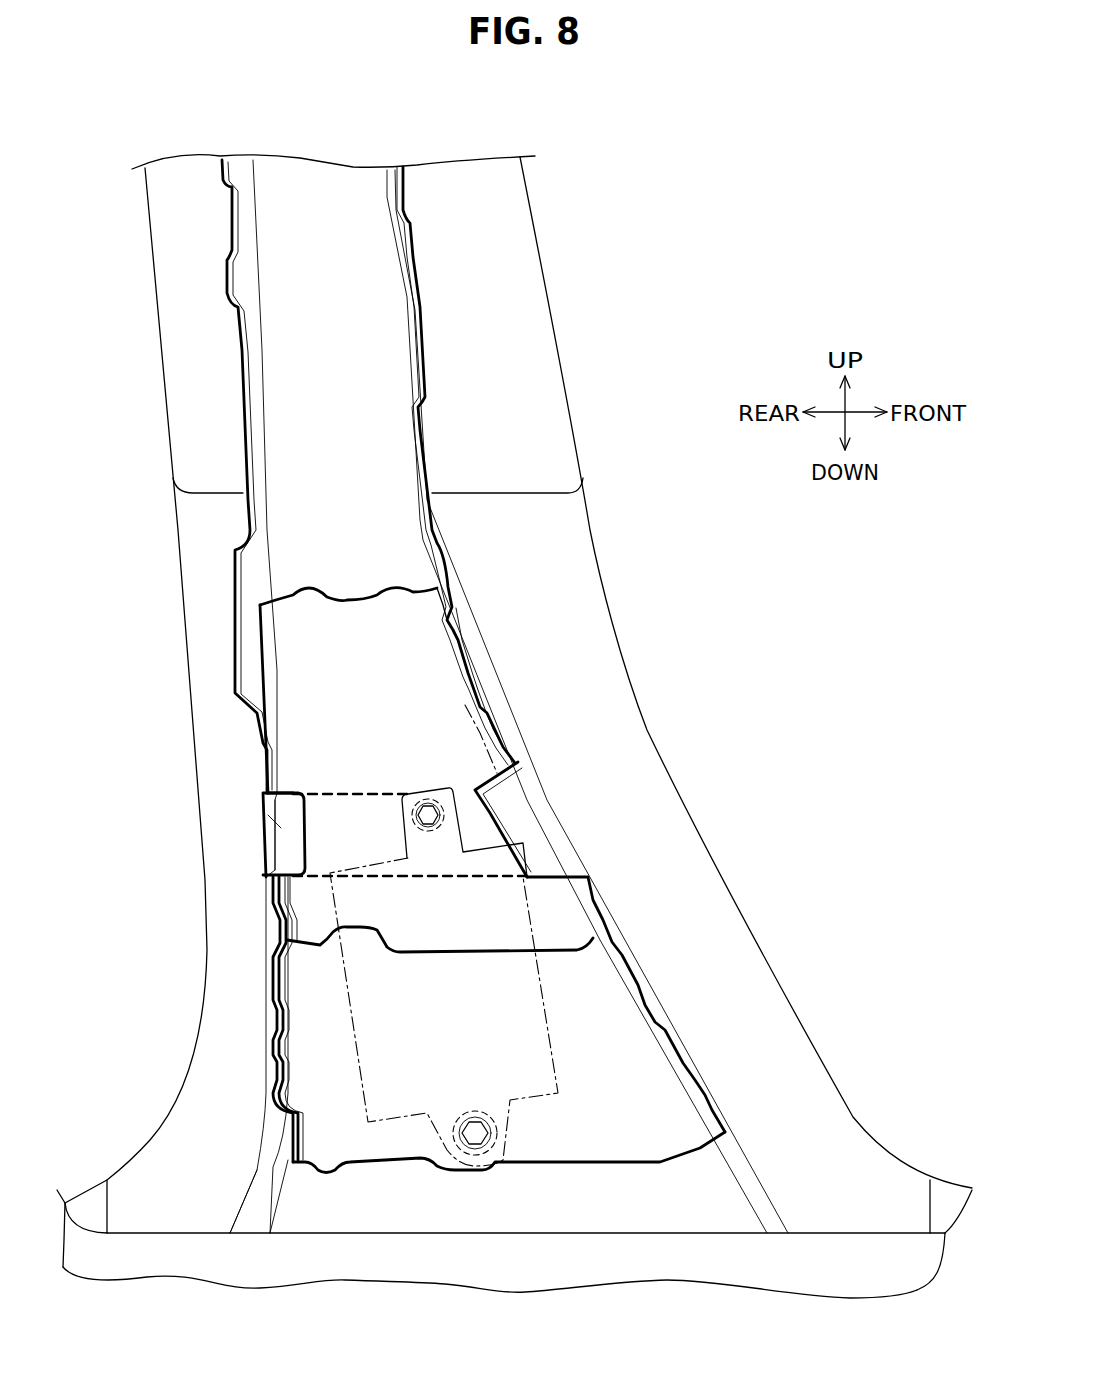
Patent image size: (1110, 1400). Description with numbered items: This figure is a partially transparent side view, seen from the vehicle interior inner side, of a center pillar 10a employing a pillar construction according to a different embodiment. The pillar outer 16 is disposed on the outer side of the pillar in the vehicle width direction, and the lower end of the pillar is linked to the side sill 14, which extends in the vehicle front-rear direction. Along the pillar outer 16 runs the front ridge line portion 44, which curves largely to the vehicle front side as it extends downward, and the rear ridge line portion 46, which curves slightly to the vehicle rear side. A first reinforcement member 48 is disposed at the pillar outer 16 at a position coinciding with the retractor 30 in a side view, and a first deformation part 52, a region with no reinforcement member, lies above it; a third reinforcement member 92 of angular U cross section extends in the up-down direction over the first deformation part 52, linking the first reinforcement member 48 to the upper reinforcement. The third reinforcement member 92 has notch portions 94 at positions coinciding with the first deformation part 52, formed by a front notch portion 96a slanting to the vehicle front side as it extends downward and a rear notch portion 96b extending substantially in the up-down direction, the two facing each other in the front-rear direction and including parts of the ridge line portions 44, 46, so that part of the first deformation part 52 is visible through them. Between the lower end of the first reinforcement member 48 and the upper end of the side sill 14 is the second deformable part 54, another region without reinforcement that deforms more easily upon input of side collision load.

The center pillar 10a is at (578, 232).
The pillar outer 16 is at (571, 331).
The side sill 14 is at (487, 1268).
The third reinforcement member 92 is at (487, 708).
The front ridge line portion 44 is at (488, 812).
The notch portions 94 is at (433, 975).
The front notch portion 96a is at (475, 790).
The rear notch portion 96b is at (267, 875).
The first deformation part 52 is at (250, 795).
The rear ridge line portion 46 is at (280, 828).
The retractor 30 is at (557, 1002).
The first reinforcement member 48 is at (710, 1080).
The second deformable part 54 is at (282, 1162).